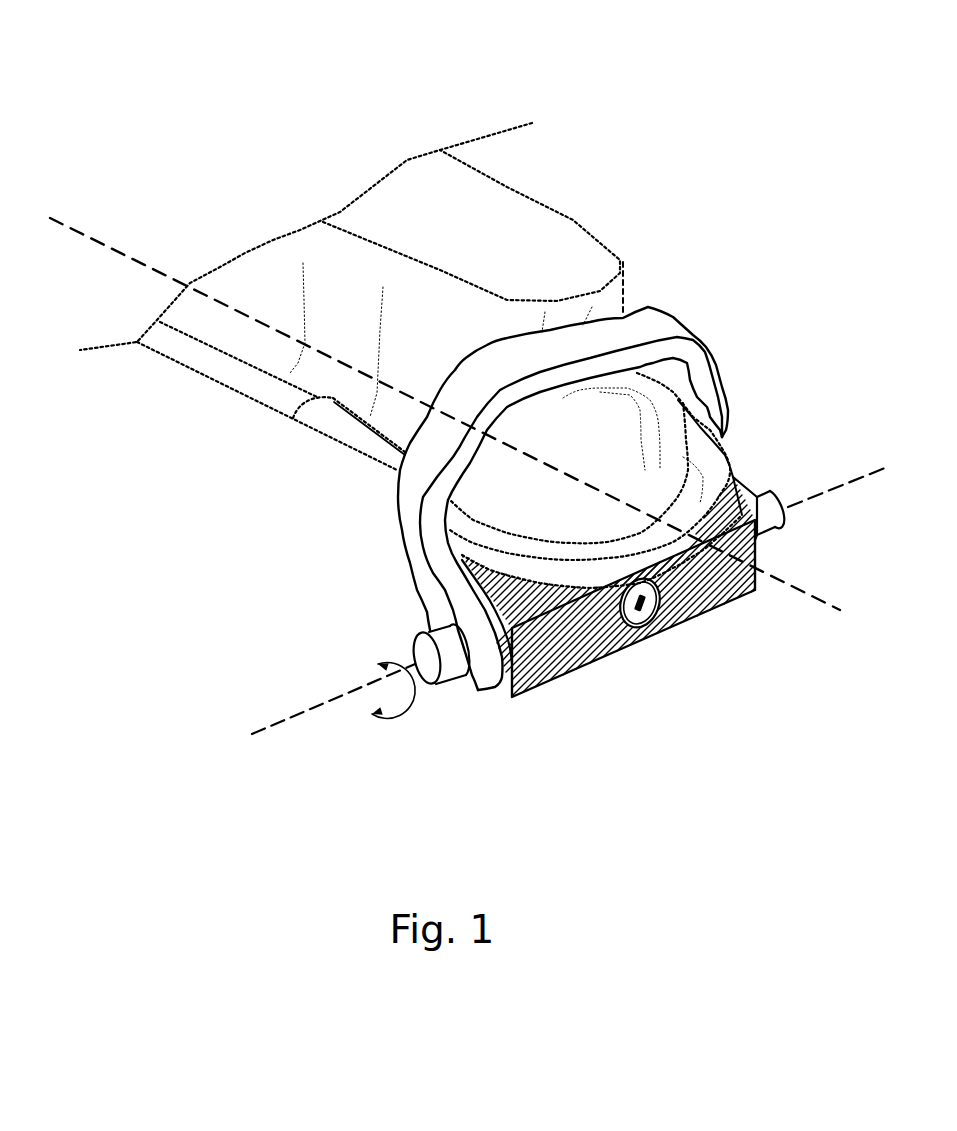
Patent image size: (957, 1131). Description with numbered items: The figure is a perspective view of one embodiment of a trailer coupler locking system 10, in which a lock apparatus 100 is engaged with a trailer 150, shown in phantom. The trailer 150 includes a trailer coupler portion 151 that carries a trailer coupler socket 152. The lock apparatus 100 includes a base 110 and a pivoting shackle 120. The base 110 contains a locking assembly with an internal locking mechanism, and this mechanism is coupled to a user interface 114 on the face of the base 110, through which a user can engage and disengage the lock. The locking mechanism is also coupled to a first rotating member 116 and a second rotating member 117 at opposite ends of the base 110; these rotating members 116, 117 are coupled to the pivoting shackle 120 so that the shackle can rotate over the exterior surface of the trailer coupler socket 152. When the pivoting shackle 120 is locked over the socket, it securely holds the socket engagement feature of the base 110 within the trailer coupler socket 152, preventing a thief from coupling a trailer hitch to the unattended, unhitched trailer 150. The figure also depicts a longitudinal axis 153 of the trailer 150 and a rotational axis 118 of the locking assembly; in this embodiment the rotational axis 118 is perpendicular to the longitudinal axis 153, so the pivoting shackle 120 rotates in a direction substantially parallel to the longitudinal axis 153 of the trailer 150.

The trailer coupler locking system 10 is at (752, 72).
The lock apparatus 100 is at (420, 798).
The base 110 is at (567, 657).
The user interface 114 is at (658, 608).
The first rotating member 116 is at (413, 636).
The second rotating member 117 is at (786, 524).
The rotational axis 118 is at (855, 482).
The pivoting shackle 120 is at (660, 323).
The trailer 150 is at (182, 445).
The trailer coupler portion 151 is at (407, 416).
The trailer coupler socket 152 is at (508, 494).
The longitudinal axis 153 is at (128, 258).